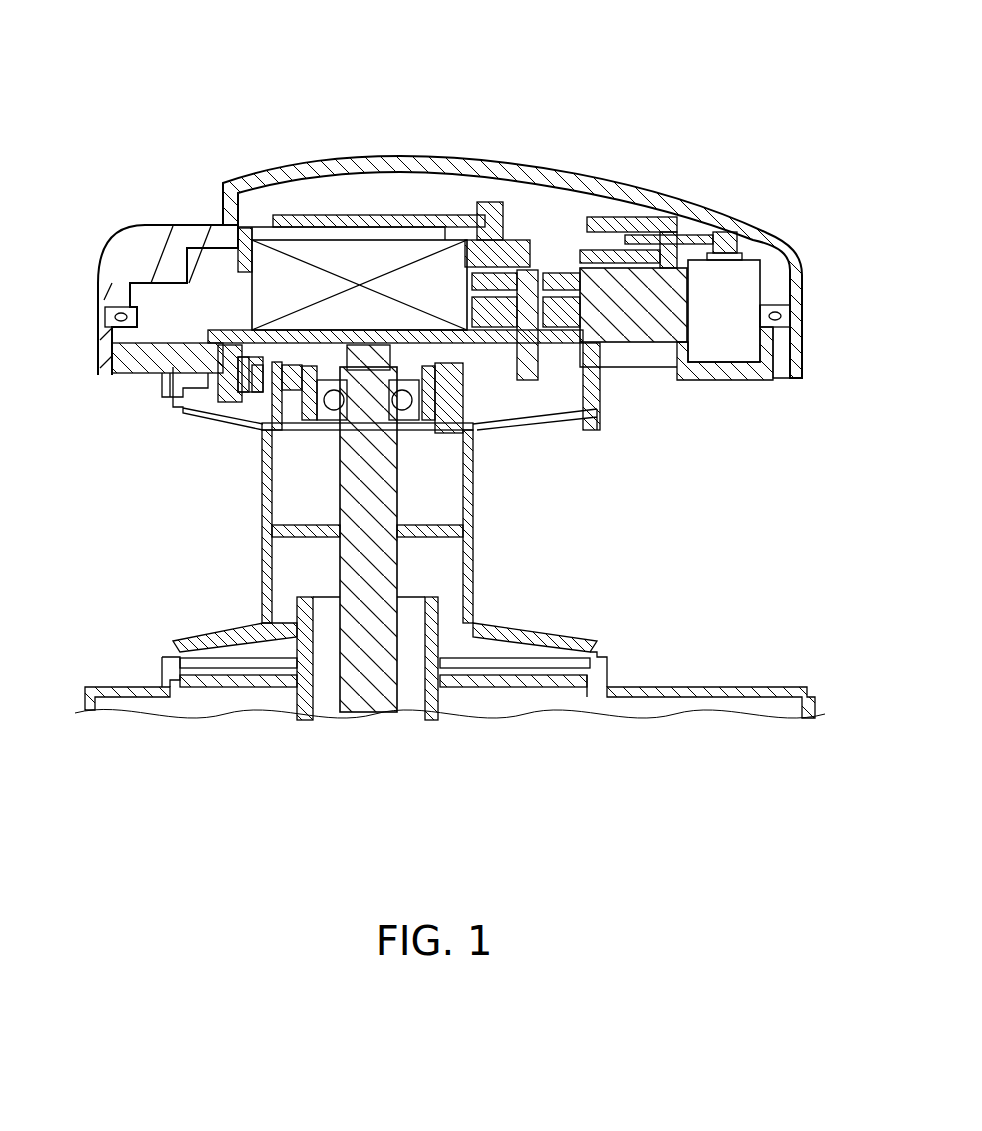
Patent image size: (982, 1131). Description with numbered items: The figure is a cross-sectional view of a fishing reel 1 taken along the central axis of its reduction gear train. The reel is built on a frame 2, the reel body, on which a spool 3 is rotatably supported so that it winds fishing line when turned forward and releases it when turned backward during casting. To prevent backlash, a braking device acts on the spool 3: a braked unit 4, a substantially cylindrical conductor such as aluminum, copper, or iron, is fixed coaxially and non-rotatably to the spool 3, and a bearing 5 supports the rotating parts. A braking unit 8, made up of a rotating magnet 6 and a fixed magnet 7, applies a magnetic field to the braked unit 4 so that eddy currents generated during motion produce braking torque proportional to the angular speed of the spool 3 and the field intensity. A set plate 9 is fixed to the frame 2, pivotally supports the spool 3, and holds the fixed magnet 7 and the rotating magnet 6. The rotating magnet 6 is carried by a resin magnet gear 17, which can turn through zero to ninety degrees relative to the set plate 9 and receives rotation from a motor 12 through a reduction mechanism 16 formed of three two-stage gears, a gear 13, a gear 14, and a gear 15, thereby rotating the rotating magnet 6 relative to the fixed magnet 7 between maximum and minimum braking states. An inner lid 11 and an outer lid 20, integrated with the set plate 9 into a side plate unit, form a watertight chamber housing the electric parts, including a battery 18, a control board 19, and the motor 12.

The fishing reel 1 is at (469, 27).
The frame 2 is at (613, 390).
The spool 3 is at (484, 635).
The braked unit 4 is at (470, 408).
The bearing 5 is at (413, 415).
The rotating magnet 6 is at (245, 395).
The fixed magnet 7 is at (262, 395).
The braking unit 8 is at (90, 498).
The set plate 9 is at (180, 413).
The inner lid 11 is at (115, 330).
The motor 12 is at (727, 342).
The gear 13 is at (503, 357).
The gear 14 is at (560, 240).
The gear 15 is at (657, 237).
The reduction mechanism 16 is at (650, 103).
The magnet gear 17 is at (230, 400).
The battery 18 is at (318, 250).
The control board 19 is at (370, 225).
The outer lid 20 is at (120, 270).